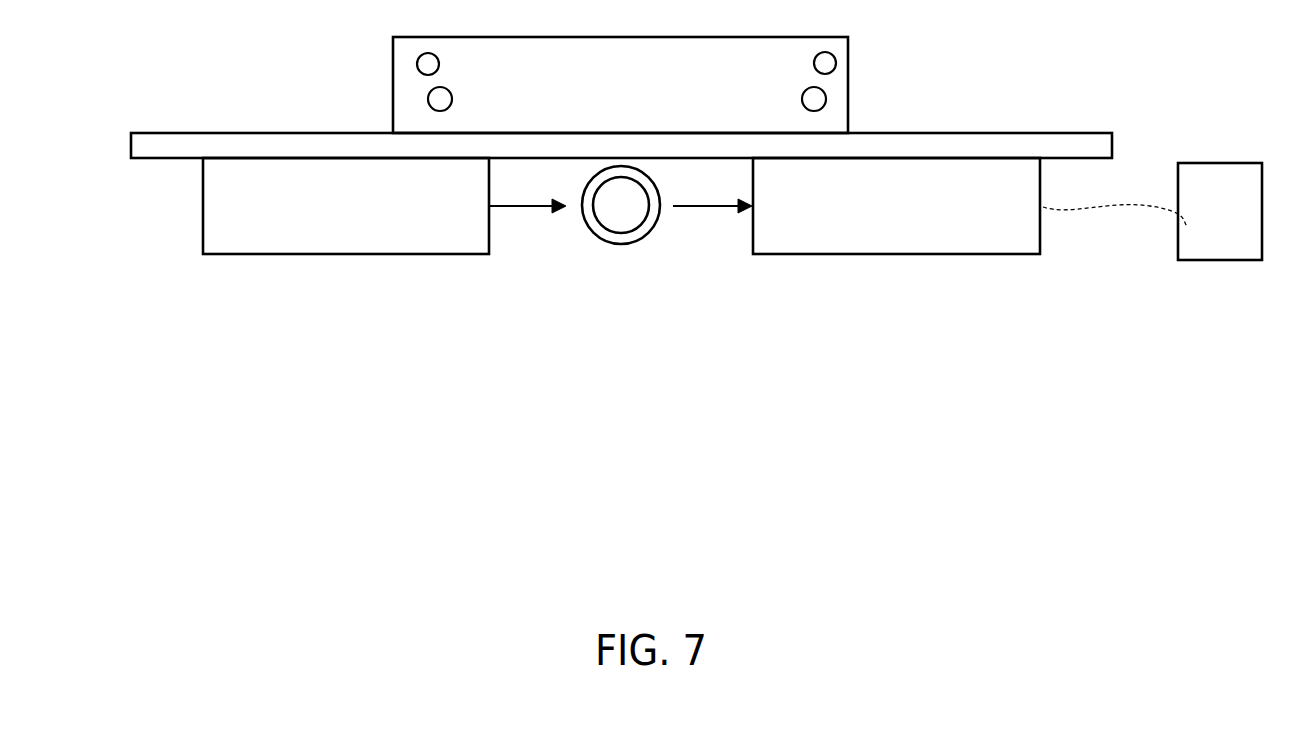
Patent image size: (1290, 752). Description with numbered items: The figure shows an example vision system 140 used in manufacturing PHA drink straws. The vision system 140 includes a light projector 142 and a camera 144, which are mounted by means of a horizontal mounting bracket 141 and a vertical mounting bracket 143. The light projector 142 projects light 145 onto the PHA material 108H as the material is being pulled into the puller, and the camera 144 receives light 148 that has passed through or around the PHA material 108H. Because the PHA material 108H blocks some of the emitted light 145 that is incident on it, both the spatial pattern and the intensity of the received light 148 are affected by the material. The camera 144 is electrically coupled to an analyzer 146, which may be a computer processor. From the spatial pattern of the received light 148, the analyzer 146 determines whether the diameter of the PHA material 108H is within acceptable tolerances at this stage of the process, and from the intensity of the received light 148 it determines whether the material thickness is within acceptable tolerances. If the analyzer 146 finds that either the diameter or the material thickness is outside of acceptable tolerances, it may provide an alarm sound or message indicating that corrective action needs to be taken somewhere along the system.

The vision system 140 is at (1008, 48).
The horizontal mounting bracket 141 is at (196, 136).
The light projector 142 is at (238, 235).
The vertical mounting bracket 143 is at (393, 100).
The camera 144 is at (878, 238).
The light 145 is at (525, 213).
The analyzer 146 is at (1210, 257).
The received light 148 is at (730, 210).
The PHA material 108H is at (603, 243).